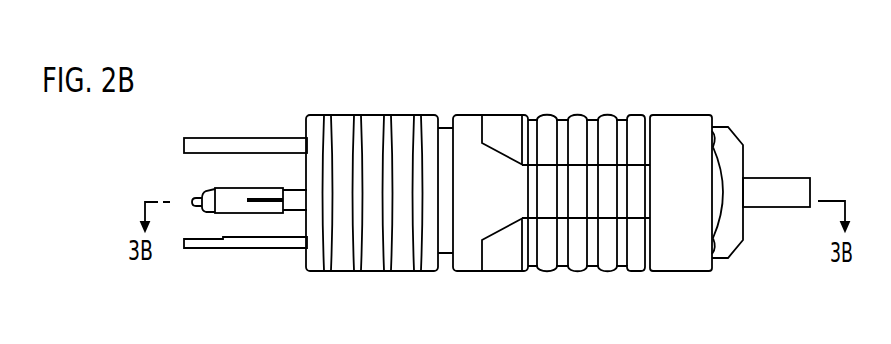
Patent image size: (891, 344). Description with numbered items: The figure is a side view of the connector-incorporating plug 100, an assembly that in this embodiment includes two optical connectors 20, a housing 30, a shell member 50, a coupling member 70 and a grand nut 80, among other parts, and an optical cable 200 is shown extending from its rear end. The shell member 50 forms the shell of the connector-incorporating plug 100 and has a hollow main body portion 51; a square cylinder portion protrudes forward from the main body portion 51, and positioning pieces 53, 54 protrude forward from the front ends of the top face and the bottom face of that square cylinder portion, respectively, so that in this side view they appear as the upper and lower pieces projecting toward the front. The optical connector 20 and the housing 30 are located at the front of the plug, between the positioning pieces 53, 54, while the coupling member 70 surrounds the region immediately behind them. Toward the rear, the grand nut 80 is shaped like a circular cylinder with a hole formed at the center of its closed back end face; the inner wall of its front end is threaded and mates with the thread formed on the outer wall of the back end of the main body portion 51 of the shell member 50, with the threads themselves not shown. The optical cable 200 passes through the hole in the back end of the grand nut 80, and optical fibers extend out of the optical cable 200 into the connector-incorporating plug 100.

The connector-incorporating plug 100 is at (332, 111).
The coupling member 70 is at (390, 113).
The shell member 50 is at (603, 113).
The main body portion 51 is at (605, 272).
The grand nut 80 is at (690, 113).
The optical cable 200 is at (793, 162).
The positioning piece 53 is at (216, 137).
The positioning piece 54 is at (210, 249).
The optical connector 20 is at (228, 187).
The housing 30 is at (293, 214).